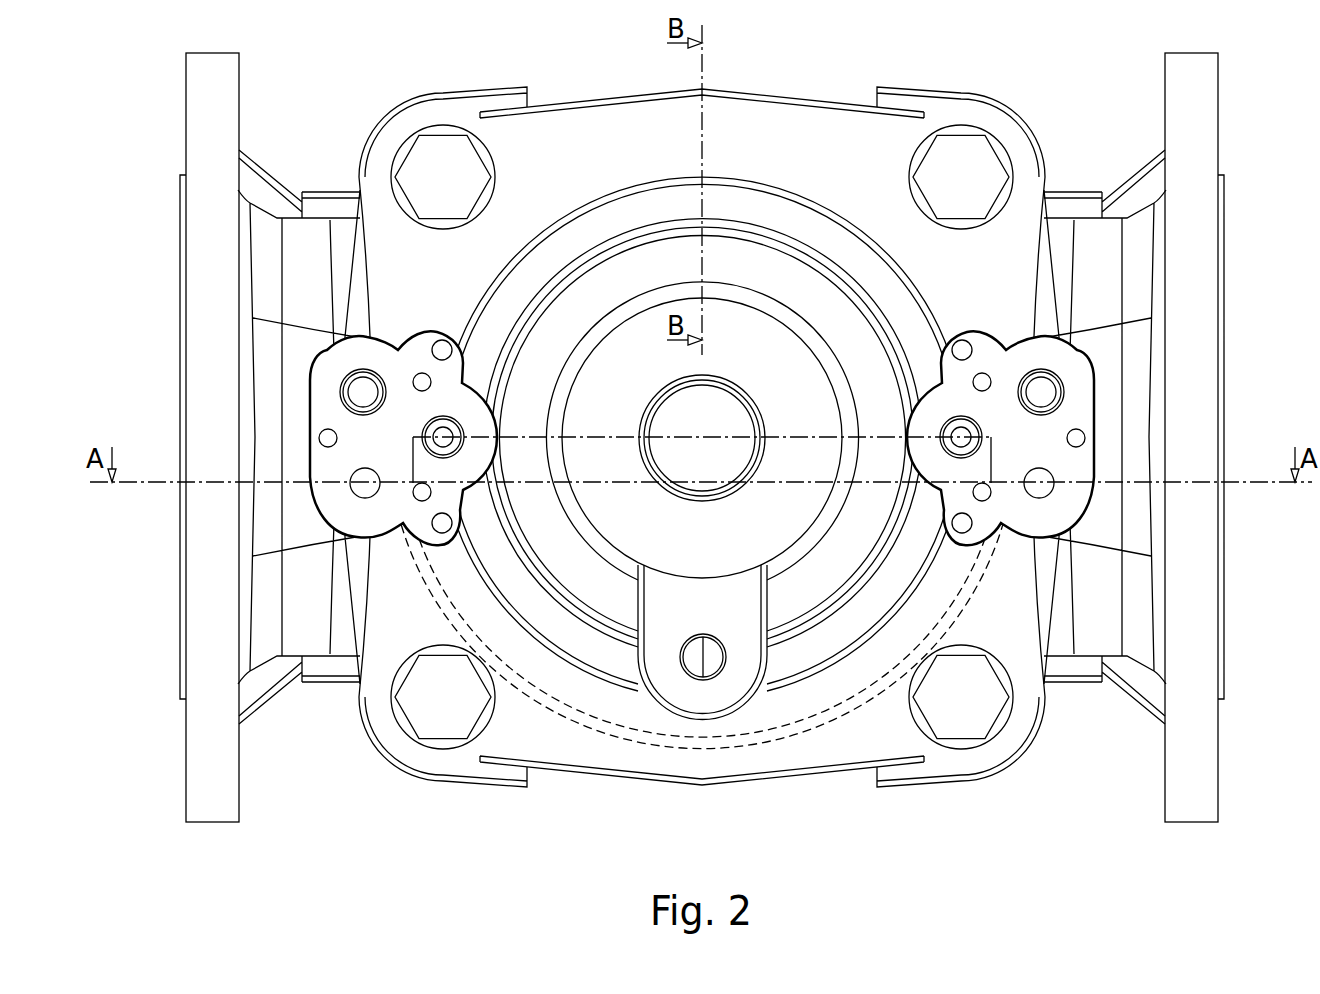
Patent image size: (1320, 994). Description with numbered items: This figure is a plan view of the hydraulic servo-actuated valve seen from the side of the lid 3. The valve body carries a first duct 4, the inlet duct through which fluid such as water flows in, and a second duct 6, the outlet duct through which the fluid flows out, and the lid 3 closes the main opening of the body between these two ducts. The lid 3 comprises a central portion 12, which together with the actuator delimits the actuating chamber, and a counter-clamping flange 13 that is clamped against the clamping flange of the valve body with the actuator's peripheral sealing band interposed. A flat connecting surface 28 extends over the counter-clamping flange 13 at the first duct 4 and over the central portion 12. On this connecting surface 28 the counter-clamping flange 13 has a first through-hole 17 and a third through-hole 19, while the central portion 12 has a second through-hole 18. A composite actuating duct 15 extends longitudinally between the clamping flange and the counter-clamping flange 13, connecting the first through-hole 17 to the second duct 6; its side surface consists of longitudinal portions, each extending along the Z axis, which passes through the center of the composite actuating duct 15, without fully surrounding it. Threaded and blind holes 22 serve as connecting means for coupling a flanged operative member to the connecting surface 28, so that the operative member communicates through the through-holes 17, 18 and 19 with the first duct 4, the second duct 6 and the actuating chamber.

The lid 3 is at (645, 790).
The first duct 4 is at (293, 228).
The second duct 6 is at (1111, 228).
The central portion 12 is at (624, 425).
The counter-clamping flange 13 is at (581, 157).
The composite actuating duct 15 is at (767, 778).
The first through-hole 17 is at (363, 490).
The second through-hole 18 is at (420, 492).
The third through-hole 19 is at (363, 390).
The threaded and blind holes 22 is at (440, 340).
The flat connecting surface 28 is at (397, 373).
The Z axis Z is at (700, 785).